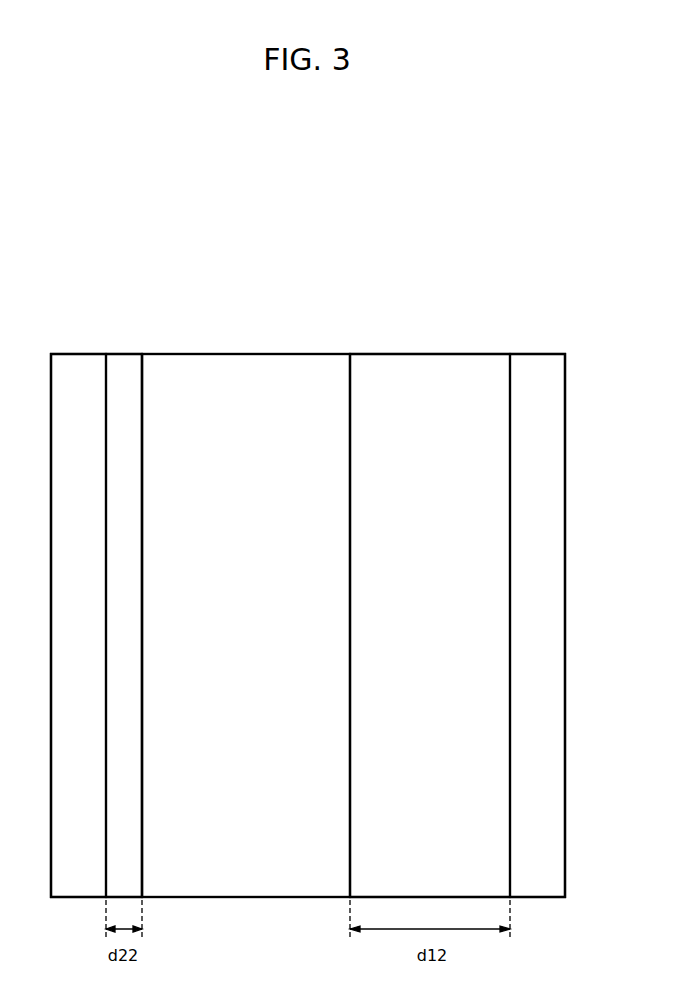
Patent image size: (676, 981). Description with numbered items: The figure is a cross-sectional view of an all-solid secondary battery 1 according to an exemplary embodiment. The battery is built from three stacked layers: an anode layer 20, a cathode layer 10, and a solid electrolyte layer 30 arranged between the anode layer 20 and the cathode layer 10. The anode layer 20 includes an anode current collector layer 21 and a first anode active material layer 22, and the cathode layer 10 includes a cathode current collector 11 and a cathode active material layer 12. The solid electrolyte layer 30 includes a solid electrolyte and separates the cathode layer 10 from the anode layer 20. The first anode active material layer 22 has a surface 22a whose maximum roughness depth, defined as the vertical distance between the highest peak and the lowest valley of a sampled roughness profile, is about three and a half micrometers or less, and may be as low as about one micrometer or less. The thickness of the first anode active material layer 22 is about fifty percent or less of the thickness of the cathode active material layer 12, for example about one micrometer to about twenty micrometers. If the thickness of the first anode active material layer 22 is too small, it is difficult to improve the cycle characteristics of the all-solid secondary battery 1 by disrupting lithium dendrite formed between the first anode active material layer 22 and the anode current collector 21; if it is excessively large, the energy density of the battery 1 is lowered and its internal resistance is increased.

The all-solid secondary battery 1 is at (402, 232).
The cathode layer 10 is at (543, 284).
The cathode current collector 11 is at (537, 368).
The cathode active material layer 12 is at (432, 368).
The anode layer 20 is at (72, 284).
The anode current collector layer 21 is at (80, 368).
The first anode active material layer 22 is at (125, 368).
The surface of the first anode active material layer 22a is at (143, 380).
The solid electrolyte layer 30 is at (251, 368).